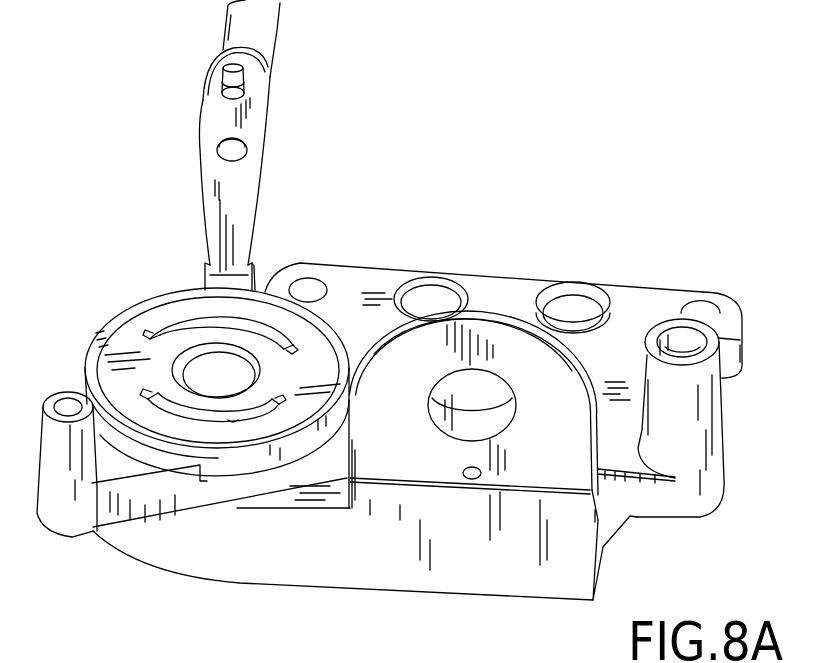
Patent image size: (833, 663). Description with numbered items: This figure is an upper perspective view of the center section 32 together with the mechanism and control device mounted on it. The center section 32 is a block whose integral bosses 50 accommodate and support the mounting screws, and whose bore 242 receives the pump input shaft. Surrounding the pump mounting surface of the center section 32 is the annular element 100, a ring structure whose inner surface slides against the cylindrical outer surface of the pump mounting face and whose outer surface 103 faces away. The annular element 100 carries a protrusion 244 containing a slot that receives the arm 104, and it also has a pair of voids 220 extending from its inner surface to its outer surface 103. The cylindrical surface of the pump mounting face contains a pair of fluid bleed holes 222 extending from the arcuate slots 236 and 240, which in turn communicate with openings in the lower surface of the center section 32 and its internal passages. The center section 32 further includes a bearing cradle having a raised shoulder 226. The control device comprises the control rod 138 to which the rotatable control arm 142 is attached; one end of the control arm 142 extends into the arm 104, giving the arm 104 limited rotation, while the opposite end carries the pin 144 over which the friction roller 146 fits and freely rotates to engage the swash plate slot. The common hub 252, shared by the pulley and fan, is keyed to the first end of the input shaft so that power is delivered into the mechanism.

The center section 32 is at (636, 254).
The integral bosses 50 is at (318, 271).
The annular element 100 is at (219, 472).
The outer surface 103 is at (330, 432).
The arm 104 is at (222, 200).
The control rod 138 is at (262, 34).
The control arm 142 is at (253, 117).
The pin 144 is at (230, 97).
The friction roller 146 is at (243, 78).
The voids 220 is at (265, 423).
The fluid bleed holes 222 is at (150, 320).
The raised shoulder 226 is at (495, 312).
The arcuate slot 236 is at (232, 423).
The arcuate slot 240 is at (190, 318).
The bore 242 is at (192, 380).
The protrusion 244 is at (255, 273).
The common hub 252 is at (235, 153).